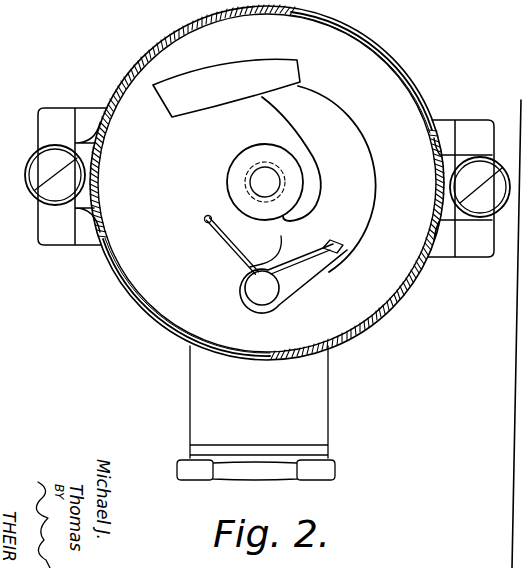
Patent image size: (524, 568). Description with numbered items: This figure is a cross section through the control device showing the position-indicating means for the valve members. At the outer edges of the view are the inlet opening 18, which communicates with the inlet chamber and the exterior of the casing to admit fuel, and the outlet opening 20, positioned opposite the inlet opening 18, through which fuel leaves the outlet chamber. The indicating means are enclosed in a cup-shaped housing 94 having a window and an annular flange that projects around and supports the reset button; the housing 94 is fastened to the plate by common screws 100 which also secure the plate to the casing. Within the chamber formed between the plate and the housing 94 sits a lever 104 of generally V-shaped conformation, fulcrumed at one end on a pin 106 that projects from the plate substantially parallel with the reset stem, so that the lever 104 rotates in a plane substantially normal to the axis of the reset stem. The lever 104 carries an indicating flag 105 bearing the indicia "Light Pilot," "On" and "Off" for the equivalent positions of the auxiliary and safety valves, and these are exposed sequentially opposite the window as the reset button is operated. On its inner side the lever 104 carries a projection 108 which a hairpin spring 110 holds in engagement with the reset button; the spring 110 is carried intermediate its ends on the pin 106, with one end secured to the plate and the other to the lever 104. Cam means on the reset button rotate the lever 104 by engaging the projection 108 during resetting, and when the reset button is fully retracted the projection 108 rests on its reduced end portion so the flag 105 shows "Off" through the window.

The inlet opening 18 is at (454, 120).
The outlet opening 20 is at (60, 108).
The cup-shaped housing 94 is at (377, 324).
The screws 100 is at (56, 197).
The lever 104 is at (329, 107).
The indicating flag 105 is at (245, 62).
The pin 106 is at (255, 295).
The projection 108 is at (283, 226).
The hairpin spring 110 is at (222, 245).